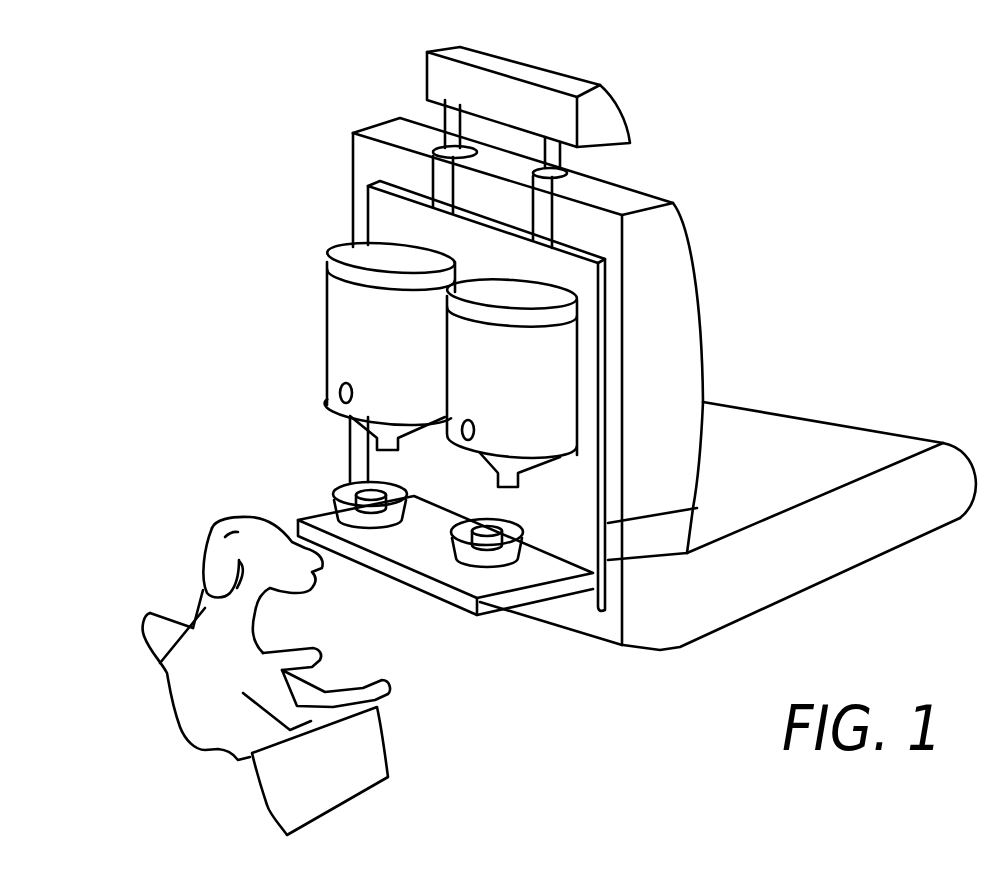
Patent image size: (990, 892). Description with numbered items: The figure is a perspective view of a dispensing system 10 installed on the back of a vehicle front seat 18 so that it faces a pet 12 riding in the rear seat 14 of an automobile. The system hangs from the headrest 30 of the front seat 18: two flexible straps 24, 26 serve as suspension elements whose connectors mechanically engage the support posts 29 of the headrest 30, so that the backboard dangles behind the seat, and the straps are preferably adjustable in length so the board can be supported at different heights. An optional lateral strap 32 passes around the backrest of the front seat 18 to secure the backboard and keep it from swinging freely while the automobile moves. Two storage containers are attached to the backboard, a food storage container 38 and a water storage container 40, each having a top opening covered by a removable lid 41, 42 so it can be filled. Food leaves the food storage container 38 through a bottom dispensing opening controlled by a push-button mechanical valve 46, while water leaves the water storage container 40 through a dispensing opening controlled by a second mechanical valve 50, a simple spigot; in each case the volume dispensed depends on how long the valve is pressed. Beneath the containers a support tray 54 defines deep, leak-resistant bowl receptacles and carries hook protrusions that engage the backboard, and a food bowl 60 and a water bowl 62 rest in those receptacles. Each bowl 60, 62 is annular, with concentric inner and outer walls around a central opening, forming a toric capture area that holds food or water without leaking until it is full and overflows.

The dispensing system 10 is at (302, 175).
The pet 12 is at (207, 615).
The rear seat 14 is at (357, 747).
The front seat 18 is at (690, 352).
The flexible strap 24 is at (440, 172).
The flexible strap 26 is at (547, 212).
The support posts 29 is at (560, 152).
The headrest 30 is at (547, 78).
The lateral strap 32 is at (645, 538).
The food storage container 38 is at (590, 384).
The water storage container 40 is at (340, 336).
The removable lid 41 is at (542, 300).
The removable lid 42 is at (343, 253).
The mechanical valve 46 is at (337, 395).
The second mechanical valve 50 is at (448, 431).
The support tray 54 is at (323, 516).
The food bowl 60 is at (363, 520).
The water bowl 62 is at (487, 563).